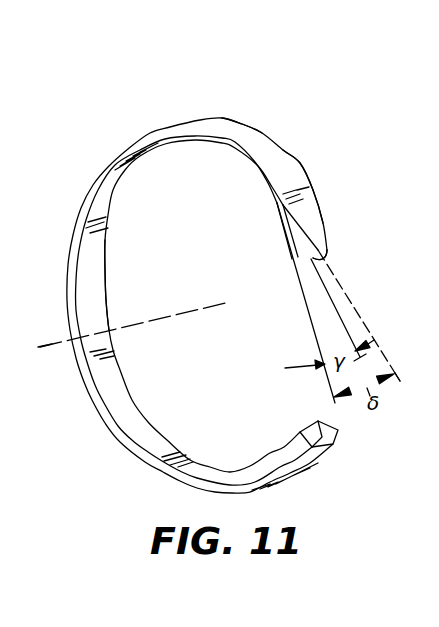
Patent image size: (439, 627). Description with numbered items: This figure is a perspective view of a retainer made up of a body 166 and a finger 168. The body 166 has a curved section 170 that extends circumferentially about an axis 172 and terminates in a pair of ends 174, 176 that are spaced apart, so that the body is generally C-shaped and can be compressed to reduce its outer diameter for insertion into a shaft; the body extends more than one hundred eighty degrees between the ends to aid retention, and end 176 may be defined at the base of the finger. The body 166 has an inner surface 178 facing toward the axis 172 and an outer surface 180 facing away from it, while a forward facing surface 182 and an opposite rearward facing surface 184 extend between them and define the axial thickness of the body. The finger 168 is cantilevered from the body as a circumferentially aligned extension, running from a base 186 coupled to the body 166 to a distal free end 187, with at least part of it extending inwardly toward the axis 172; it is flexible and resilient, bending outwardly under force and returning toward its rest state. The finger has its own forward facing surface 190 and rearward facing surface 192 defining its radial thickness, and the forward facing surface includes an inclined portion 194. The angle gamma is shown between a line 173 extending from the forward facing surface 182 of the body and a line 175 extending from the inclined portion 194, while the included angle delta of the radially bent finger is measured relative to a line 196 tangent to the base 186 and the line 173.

The body 166 is at (76, 186).
The finger 168 is at (286, 258).
The curved section 170 is at (107, 290).
The axis 172 is at (48, 347).
The line 173 is at (307, 308).
The end 174 is at (316, 420).
The line 175 is at (344, 328).
The end 176 is at (298, 162).
The inner surface 178 is at (98, 246).
The outer surface 180 is at (235, 123).
The forward facing surface 182 is at (165, 131).
The rearward facing surface 184 is at (213, 463).
The base 186 is at (277, 203).
The free end 187 is at (328, 262).
The forward facing surface 190 is at (281, 211).
The rearward facing surface 192 is at (324, 224).
The inclined portion 194 is at (288, 228).
The line 196 is at (381, 350).